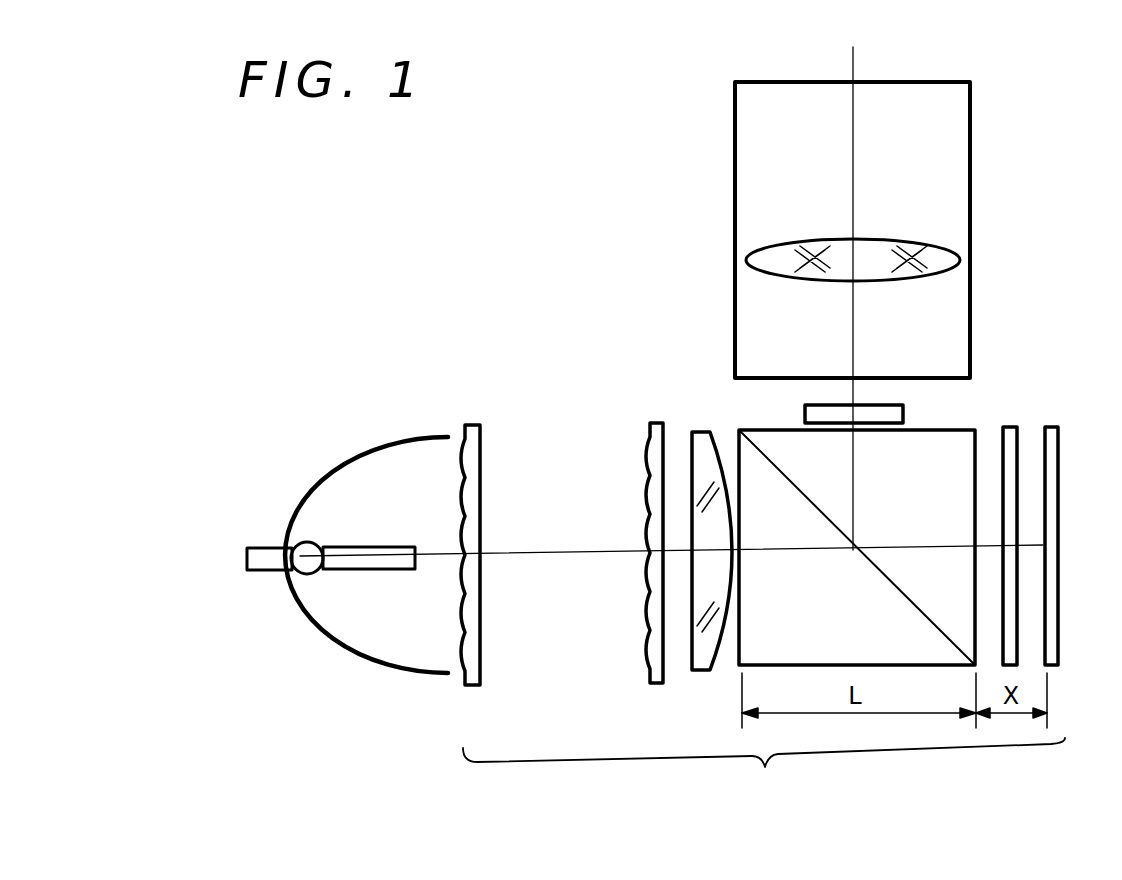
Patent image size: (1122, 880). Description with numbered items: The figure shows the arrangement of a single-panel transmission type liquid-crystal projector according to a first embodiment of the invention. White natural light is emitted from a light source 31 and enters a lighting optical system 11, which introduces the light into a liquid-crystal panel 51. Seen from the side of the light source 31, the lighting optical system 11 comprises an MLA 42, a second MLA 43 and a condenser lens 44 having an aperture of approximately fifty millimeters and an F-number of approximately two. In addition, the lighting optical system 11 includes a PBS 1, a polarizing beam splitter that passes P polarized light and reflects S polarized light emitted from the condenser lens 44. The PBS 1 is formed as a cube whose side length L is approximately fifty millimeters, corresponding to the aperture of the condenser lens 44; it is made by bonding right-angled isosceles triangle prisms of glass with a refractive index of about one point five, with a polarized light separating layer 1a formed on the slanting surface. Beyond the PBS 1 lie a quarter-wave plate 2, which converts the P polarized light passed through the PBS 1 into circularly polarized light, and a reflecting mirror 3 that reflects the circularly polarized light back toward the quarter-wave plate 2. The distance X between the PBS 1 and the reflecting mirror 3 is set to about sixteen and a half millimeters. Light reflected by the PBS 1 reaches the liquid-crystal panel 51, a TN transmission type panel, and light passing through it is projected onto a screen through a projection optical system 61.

The PBS (polarizing beam splitter) 1 is at (884, 512).
The polarized light separating layer 1a is at (887, 580).
The quarter-wave plate 2 is at (1017, 458).
The reflecting mirror 3 is at (1058, 503).
The lighting optical system 11 is at (764, 770).
The light source 31 is at (358, 453).
The MLA (multi-lens array) 42 is at (473, 427).
The MLA (multi-lens array) 43 is at (658, 422).
The condenser lens 44 is at (698, 672).
The liquid-crystal panel 51 is at (895, 403).
The projection optical system 61 is at (970, 193).